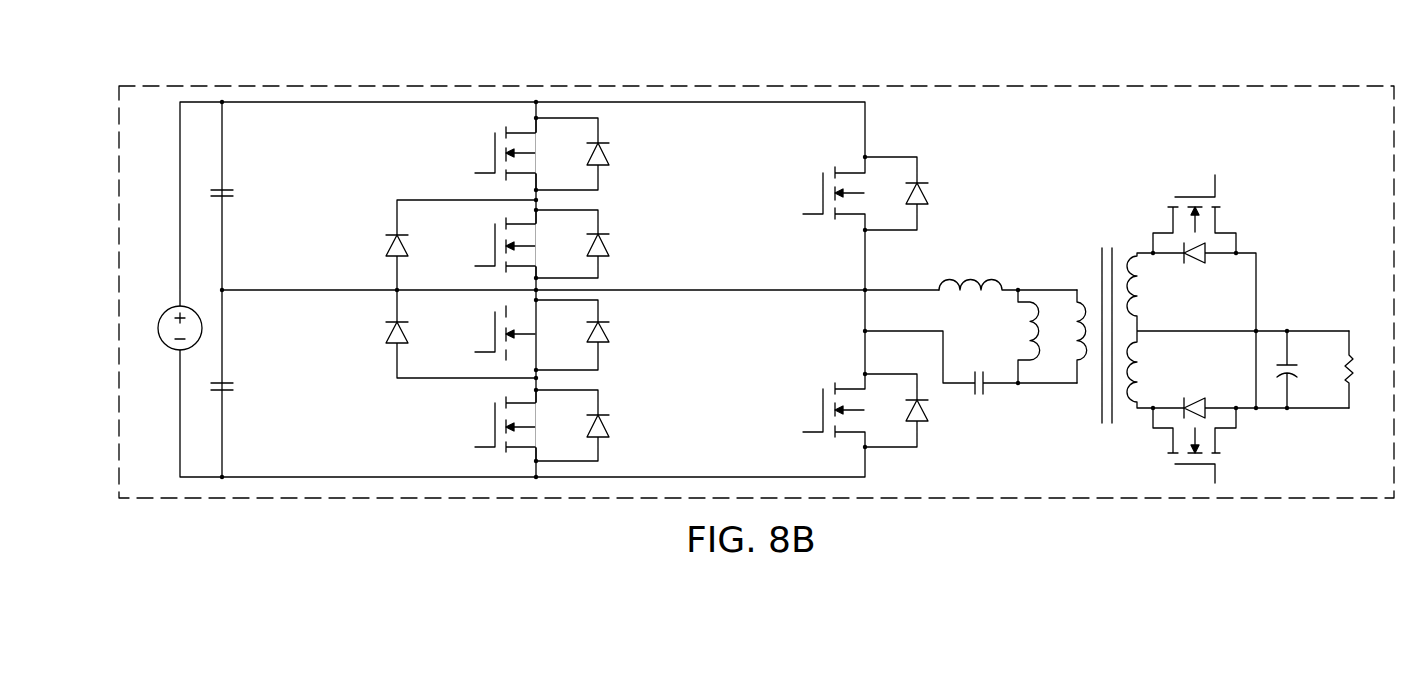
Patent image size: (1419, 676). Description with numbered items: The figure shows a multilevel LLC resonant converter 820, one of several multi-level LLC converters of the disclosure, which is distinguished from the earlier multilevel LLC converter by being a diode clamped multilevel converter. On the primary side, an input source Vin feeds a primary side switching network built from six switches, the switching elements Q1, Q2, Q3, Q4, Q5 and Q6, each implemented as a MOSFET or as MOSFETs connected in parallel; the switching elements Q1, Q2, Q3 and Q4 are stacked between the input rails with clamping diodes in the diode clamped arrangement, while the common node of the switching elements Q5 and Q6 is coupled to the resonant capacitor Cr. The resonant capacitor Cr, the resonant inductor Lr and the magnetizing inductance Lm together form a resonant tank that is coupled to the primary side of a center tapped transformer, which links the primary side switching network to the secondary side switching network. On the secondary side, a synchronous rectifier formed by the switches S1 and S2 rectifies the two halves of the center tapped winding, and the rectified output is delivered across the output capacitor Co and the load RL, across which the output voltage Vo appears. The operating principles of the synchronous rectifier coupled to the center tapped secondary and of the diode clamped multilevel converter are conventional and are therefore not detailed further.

The multilevel LLC resonant converter 820 is at (1352, 127).
The switching element Q1 is at (540, 153).
The switching element Q2 is at (542, 244).
The switching element Q3 is at (542, 335).
The switching element Q4 is at (542, 425).
The switching element Q5 is at (865, 193).
The switching element Q6 is at (865, 410).
The switch S1 is at (1196, 291).
The switch S2 is at (1243, 440).
The resonant inductor Lr is at (1008, 268).
The magnetizing inductance Lm is at (1041, 336).
The resonant capacitor Cr is at (971, 378).
The output capacitor Co is at (1288, 369).
The load resistor RL is at (1361, 369).
The input voltage source Vin is at (167, 328).
The output voltage Vo is at (1305, 318).